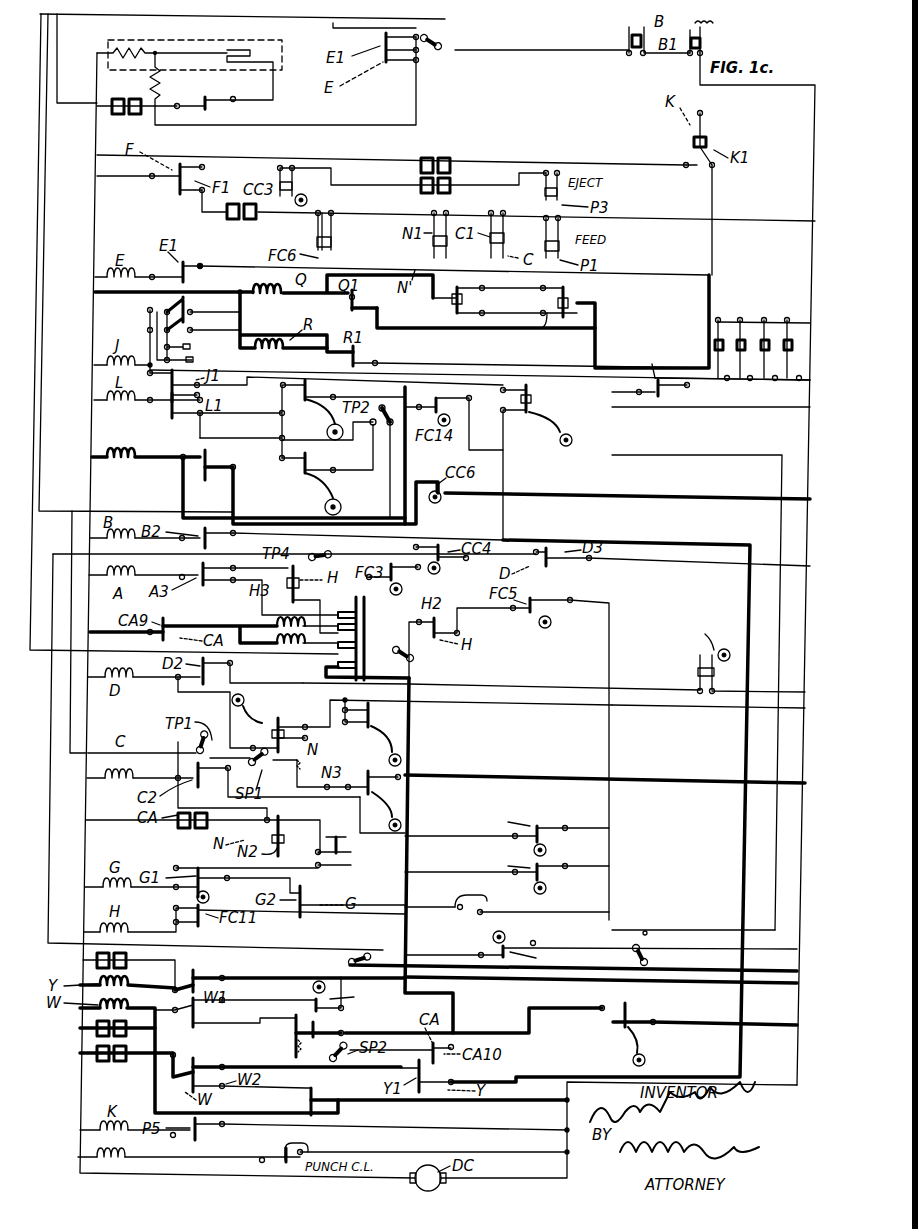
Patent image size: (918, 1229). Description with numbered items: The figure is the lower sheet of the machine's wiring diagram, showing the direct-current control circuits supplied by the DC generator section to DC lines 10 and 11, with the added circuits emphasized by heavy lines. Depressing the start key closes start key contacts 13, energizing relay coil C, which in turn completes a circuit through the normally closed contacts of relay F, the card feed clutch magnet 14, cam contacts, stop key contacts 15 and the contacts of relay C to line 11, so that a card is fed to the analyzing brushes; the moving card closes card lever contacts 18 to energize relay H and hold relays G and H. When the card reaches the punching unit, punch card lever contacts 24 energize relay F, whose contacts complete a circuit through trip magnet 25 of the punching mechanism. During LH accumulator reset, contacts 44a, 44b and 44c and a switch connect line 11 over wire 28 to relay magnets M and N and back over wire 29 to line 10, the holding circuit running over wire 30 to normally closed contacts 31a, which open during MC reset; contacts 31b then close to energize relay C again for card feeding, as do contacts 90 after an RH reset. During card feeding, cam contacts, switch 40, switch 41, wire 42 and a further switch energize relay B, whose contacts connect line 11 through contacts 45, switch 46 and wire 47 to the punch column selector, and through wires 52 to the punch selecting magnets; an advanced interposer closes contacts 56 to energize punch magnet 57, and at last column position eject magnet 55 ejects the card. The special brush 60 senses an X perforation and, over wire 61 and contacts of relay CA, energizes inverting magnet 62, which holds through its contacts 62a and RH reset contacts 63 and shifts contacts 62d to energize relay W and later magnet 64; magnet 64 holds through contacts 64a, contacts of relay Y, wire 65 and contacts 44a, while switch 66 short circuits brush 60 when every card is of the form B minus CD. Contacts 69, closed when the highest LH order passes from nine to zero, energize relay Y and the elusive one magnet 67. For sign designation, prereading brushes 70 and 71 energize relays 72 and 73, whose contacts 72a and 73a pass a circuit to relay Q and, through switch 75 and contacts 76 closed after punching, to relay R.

The DC line 10 is at (97, 194).
The DC line 11 is at (812, 198).
The start key contacts 13 is at (352, 860).
The card feed clutch magnet 14 is at (226, 217).
The stop key contacts 15 is at (375, 222).
The card lever contacts 18 is at (507, 902).
The punch card lever contacts 24 is at (282, 1150).
The trip magnet 25 is at (420, 194).
The wire 28 is at (45, 312).
The wire 29 is at (80, 57).
The wire 30 is at (55, 550).
The normally closed contacts 31a is at (419, 723).
The contacts 31b is at (372, 732).
The switch 40 is at (646, 950).
The switch 41 is at (360, 955).
The wire 42 is at (50, 905).
The contacts 44a is at (532, 395).
The contacts 44b is at (300, 390).
The contacts 44c is at (300, 473).
The contacts 45 is at (622, 47).
The switch 46 is at (448, 44).
The wire 47 is at (330, 30).
The wires 52 is at (198, 468).
The eject magnet 55 is at (458, 166).
The contacts 56 is at (212, 104).
The punch magnet 57 is at (112, 112).
The special brush 60 is at (322, 680).
The wire 61 is at (412, 938).
The magnet 62 is at (96, 1033).
The contacts 62a is at (352, 1026).
The contacts 62d is at (340, 1094).
The RH reset contacts 63 is at (640, 1012).
The magnet 64 is at (118, 1064).
The contacts 64a is at (210, 1053).
The wire 65 is at (744, 852).
The switch 66 is at (424, 660).
The elusive one entry controlling magnet 67 is at (96, 960).
The contacts 69 is at (226, 980).
The prereading brush 70 is at (338, 614).
The prereading brush 71 is at (366, 634).
The relay coil 72 is at (440, 313).
The contacts 72a is at (470, 300).
The relay coil 73 is at (580, 290).
The contacts 73a is at (486, 328).
The switch 75 is at (165, 303).
The contacts 76 is at (193, 353).
The contacts 90 is at (398, 792).